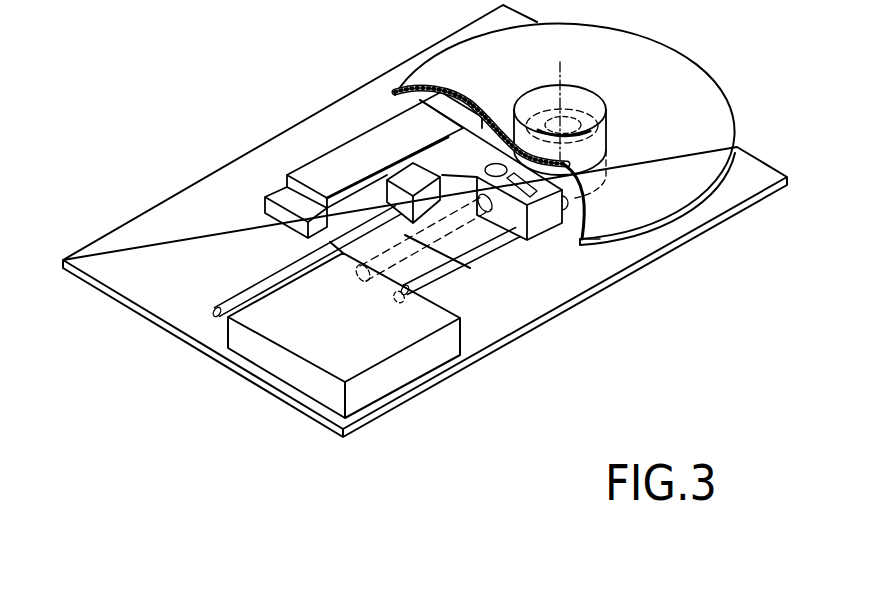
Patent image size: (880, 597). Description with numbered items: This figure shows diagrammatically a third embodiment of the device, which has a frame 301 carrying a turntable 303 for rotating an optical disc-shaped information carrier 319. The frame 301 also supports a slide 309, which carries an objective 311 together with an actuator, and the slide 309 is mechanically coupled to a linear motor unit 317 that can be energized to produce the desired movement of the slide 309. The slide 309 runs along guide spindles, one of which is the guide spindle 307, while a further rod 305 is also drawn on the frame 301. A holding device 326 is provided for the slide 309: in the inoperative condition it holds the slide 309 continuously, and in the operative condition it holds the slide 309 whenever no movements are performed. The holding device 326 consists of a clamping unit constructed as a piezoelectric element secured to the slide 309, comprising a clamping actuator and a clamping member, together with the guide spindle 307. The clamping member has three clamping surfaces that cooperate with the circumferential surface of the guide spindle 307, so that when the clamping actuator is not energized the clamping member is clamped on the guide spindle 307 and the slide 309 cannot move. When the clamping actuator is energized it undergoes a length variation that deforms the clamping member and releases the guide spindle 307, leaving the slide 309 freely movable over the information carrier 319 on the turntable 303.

The frame 301 is at (527, 302).
The turntable 303 is at (593, 170).
The guide rod 305 is at (457, 268).
The guide spindle 307 is at (246, 295).
The slide 309 is at (478, 153).
The objective 311 is at (512, 178).
The linear motor unit 317 is at (313, 175).
The optical disc-shaped information carrier 319 is at (668, 70).
The holding device 326 is at (415, 178).